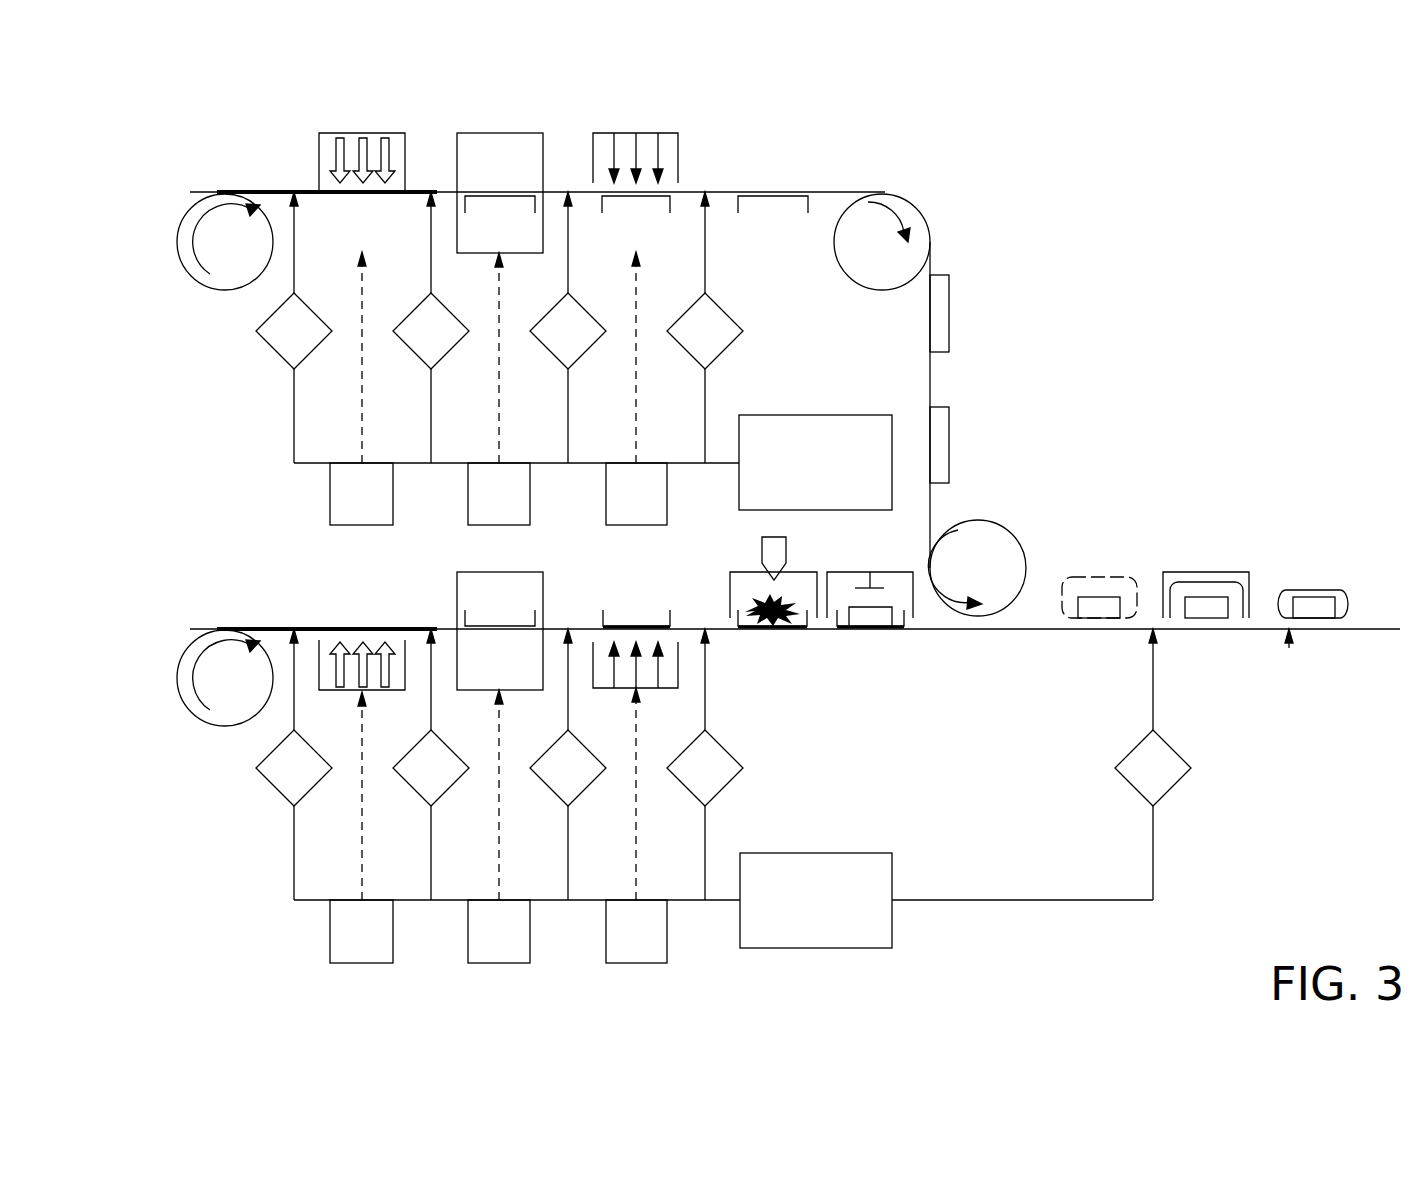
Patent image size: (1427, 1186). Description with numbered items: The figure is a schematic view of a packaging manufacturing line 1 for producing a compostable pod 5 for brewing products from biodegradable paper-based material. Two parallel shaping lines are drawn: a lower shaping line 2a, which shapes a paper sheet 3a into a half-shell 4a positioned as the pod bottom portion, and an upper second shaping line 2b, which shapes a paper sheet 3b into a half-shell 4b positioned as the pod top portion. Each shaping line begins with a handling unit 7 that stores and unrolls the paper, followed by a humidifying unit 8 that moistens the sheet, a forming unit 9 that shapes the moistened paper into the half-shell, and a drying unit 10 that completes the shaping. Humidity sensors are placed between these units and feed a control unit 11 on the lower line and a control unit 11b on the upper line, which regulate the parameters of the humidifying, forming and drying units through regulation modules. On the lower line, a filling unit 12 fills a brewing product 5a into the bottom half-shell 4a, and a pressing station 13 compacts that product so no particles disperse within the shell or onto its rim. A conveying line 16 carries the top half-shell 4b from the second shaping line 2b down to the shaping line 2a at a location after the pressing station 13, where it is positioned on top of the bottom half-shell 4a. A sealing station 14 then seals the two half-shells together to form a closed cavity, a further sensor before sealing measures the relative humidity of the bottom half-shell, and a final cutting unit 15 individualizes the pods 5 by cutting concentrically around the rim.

The packaging manufacturing line 1 is at (1138, 220).
The shaping line 2a is at (207, 937).
The second shaping line 2b is at (187, 352).
The paper sheet 3a is at (241, 626).
The paper sheet 3b is at (241, 189).
The half-shell 4a is at (672, 616).
The half-shell 4b is at (1099, 577).
The compostable pod 5 is at (1336, 590).
The brewing product 5a is at (790, 620).
The handling unit 7 is at (183, 222).
The humidifying unit 8 is at (363, 133).
The forming unit 9 is at (499, 133).
The drying unit 10 is at (636, 133).
The control unit 11 is at (862, 948).
The control unit 11b is at (822, 415).
The filling unit 12 is at (806, 572).
The pressing station 13 is at (901, 572).
The sealing station 14 is at (1207, 572).
The cutting unit 15 is at (1289, 650).
The conveying line 16 is at (931, 246).